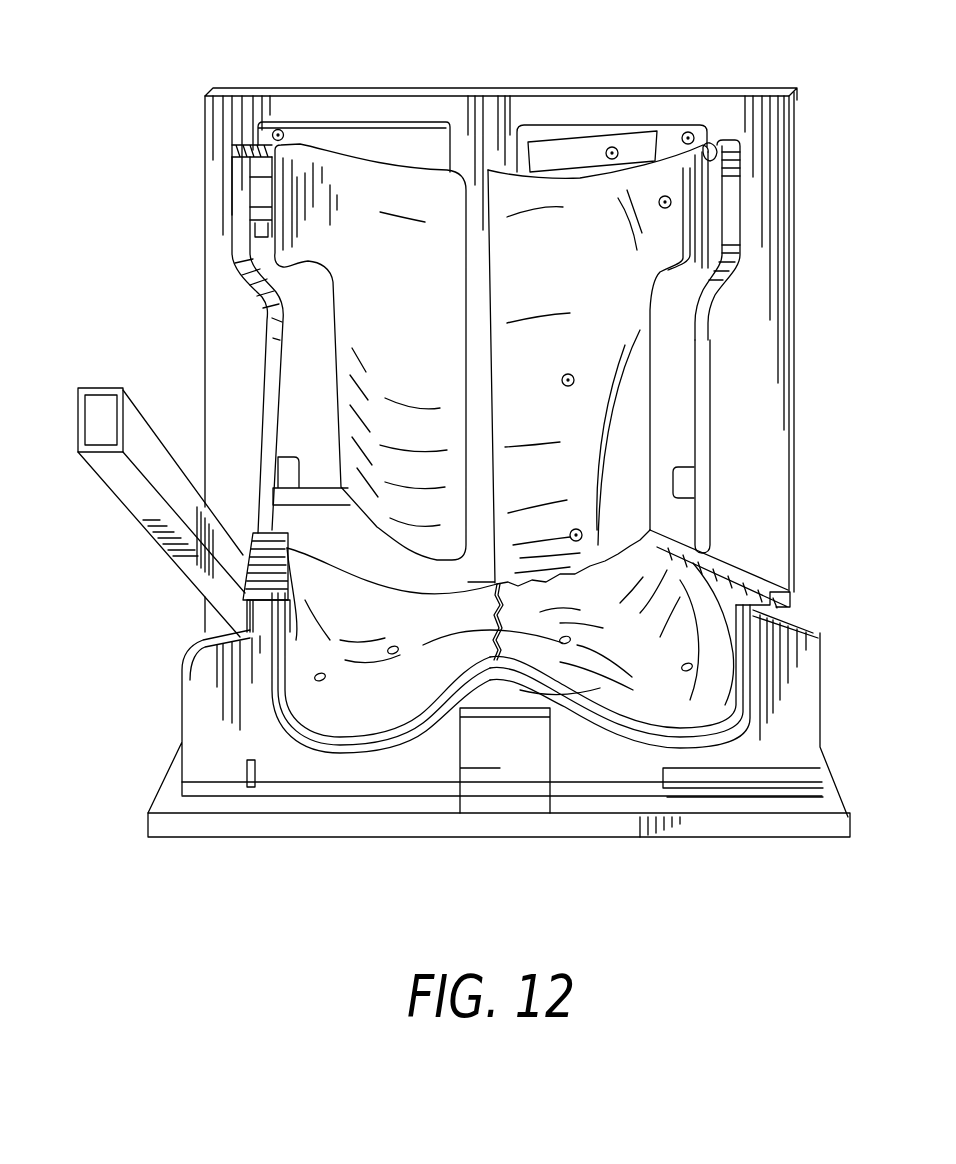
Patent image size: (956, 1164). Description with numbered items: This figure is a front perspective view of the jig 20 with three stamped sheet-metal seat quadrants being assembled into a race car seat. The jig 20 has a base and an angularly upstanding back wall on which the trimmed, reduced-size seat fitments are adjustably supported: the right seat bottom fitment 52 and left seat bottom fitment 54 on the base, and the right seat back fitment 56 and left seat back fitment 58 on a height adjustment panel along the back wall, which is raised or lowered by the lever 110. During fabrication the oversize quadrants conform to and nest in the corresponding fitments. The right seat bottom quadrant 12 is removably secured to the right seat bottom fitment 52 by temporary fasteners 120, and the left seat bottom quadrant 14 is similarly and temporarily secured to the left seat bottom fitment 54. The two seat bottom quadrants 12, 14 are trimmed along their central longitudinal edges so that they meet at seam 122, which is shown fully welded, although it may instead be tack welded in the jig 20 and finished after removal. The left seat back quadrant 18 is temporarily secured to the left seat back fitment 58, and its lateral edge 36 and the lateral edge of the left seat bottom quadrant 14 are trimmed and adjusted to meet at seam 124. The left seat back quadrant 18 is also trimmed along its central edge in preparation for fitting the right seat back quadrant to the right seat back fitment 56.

The right seat bottom quadrant 12 is at (373, 695).
The left seat bottom quadrant 14 is at (648, 703).
The left seat back quadrant 18 is at (580, 217).
The jig 20 is at (163, 236).
The lateral edge of the left seat back quadrant 36 is at (485, 238).
The right seat bottom fitment 52 is at (317, 745).
The left seat bottom fitment 54 is at (602, 730).
The right seat back fitment 56 is at (382, 238).
The left seat back fitment 58 is at (708, 310).
The lever 110 is at (103, 388).
The temporary fasteners 120 is at (312, 676).
The seam 122 is at (493, 633).
The seam 124 is at (672, 410).